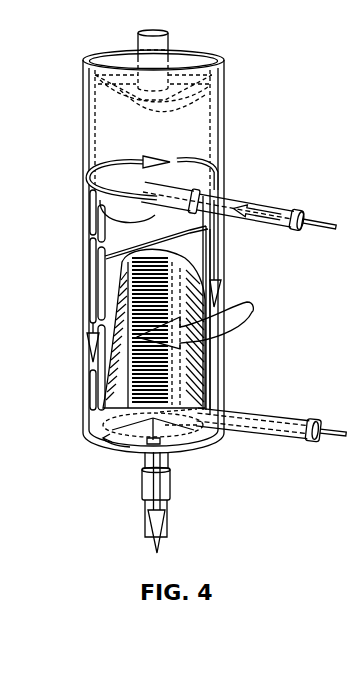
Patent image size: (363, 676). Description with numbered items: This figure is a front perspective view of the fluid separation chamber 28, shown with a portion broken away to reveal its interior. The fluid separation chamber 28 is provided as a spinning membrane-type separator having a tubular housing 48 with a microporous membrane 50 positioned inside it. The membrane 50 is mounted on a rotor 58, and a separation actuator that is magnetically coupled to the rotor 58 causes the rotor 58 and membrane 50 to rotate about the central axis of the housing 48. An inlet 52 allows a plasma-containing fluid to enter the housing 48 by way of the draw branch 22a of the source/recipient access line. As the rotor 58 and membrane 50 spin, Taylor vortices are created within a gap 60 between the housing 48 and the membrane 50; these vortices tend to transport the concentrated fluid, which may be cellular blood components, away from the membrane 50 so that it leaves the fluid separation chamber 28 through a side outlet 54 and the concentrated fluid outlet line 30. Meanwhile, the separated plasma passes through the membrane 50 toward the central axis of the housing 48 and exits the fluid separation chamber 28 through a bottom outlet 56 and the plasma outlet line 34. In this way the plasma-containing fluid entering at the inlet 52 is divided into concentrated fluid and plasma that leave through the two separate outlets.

The fluid separation chamber 28 is at (164, 233).
The tubular housing 48 is at (85, 115).
The rotor 58 is at (228, 100).
The gap 60 is at (226, 117).
The inlet 52 is at (153, 202).
The draw branch 22a is at (233, 200).
The microporous membrane 50 is at (110, 283).
The side outlet 54 is at (253, 445).
The concentrated fluid outlet line 30 is at (290, 438).
The bottom outlet 56 is at (145, 488).
The plasma outlet line 34 is at (168, 525).